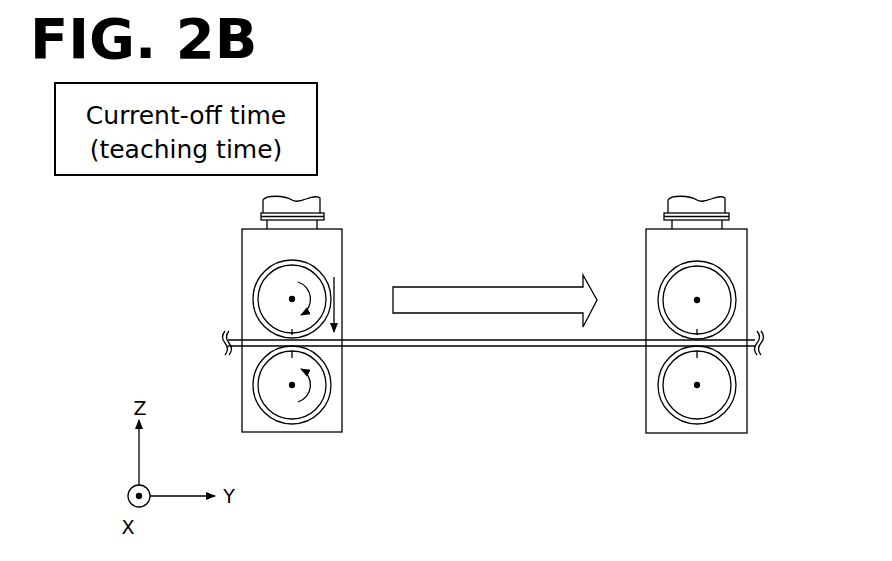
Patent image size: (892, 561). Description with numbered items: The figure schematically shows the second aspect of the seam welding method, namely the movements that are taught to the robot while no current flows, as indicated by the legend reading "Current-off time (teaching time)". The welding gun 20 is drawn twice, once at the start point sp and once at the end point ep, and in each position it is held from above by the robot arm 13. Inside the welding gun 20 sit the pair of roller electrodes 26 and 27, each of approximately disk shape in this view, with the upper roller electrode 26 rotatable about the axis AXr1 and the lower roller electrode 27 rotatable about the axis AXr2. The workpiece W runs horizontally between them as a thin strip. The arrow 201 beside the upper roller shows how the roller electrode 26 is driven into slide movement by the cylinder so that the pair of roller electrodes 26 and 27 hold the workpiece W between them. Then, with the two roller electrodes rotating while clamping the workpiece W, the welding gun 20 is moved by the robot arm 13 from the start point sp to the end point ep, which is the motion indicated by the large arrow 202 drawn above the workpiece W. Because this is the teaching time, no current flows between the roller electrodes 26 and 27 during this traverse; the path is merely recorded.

The robot arm 13 is at (341, 206).
The welding gun 20 is at (316, 447).
The roller electrode 26 is at (255, 302).
The roller electrode 27 is at (255, 387).
The workpiece W is at (491, 349).
The arrow 201 is at (343, 295).
The arrow 202 is at (497, 287).
The start point sp is at (295, 345).
The end point ep is at (690, 347).
The axis AXr1 is at (292, 299).
The axis AXr2 is at (292, 385).